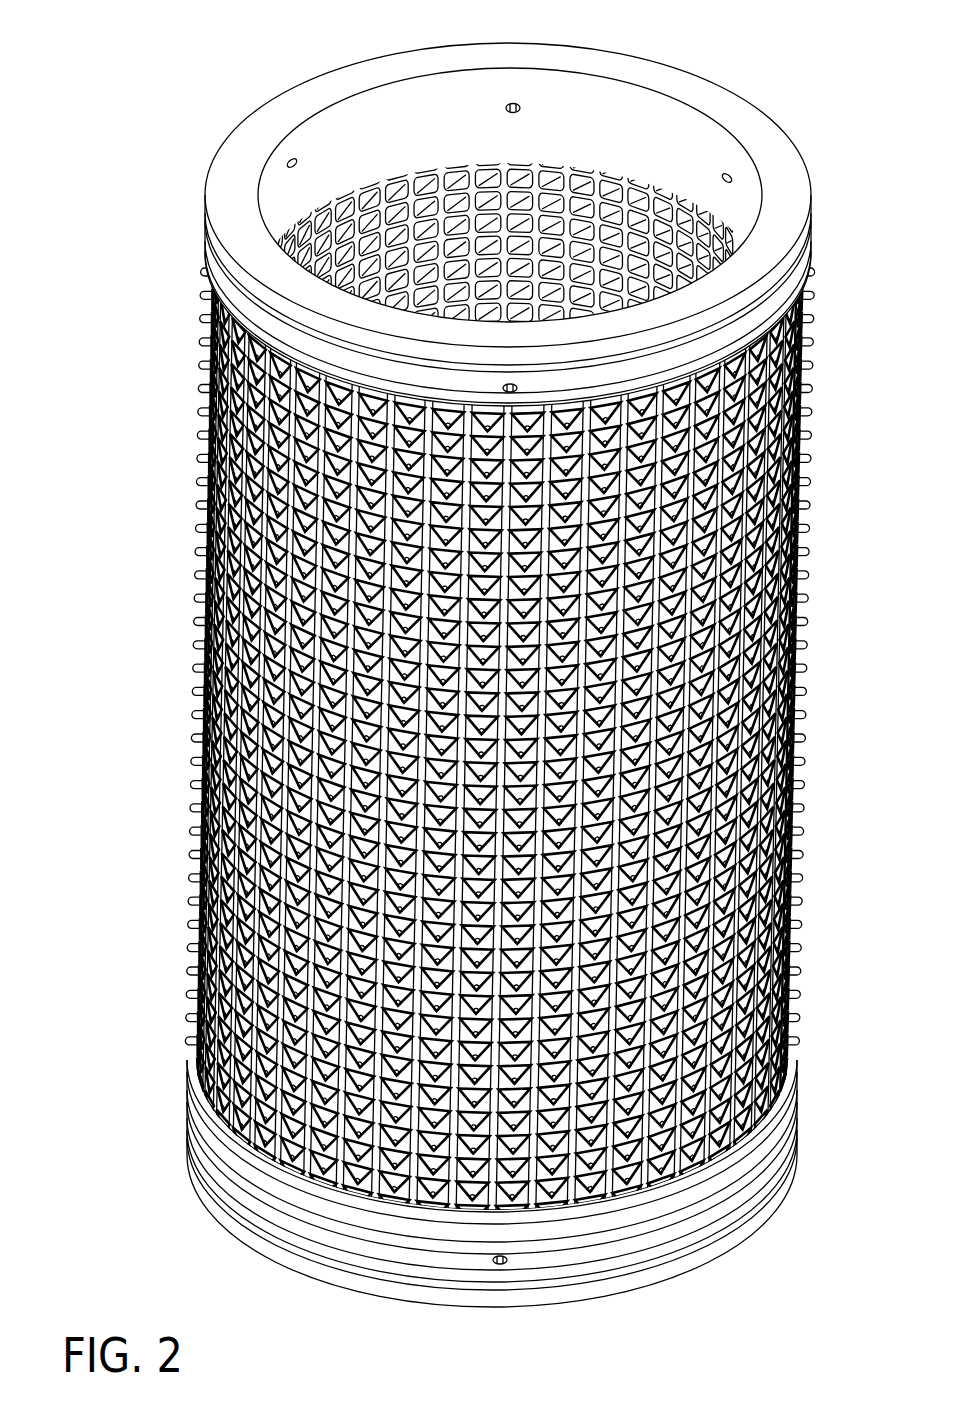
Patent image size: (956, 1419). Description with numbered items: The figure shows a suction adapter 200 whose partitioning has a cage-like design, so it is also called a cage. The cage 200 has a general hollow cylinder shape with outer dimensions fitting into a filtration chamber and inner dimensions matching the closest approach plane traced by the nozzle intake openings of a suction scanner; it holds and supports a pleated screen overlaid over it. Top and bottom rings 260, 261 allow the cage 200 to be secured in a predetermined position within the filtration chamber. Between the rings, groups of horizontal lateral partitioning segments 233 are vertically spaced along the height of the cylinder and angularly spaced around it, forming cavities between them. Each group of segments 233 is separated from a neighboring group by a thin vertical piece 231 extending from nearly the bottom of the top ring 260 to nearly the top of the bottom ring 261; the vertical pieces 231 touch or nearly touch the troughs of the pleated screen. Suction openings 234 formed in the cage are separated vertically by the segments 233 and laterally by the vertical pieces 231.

The suction adapter 200 is at (178, 67).
The top ring 260 is at (216, 157).
The bottom ring 261 is at (217, 1210).
The lateral partitioning segments 233 is at (467, 818).
The suction openings 234 is at (400, 1183).
The vertical pieces 231 is at (472, 1165).